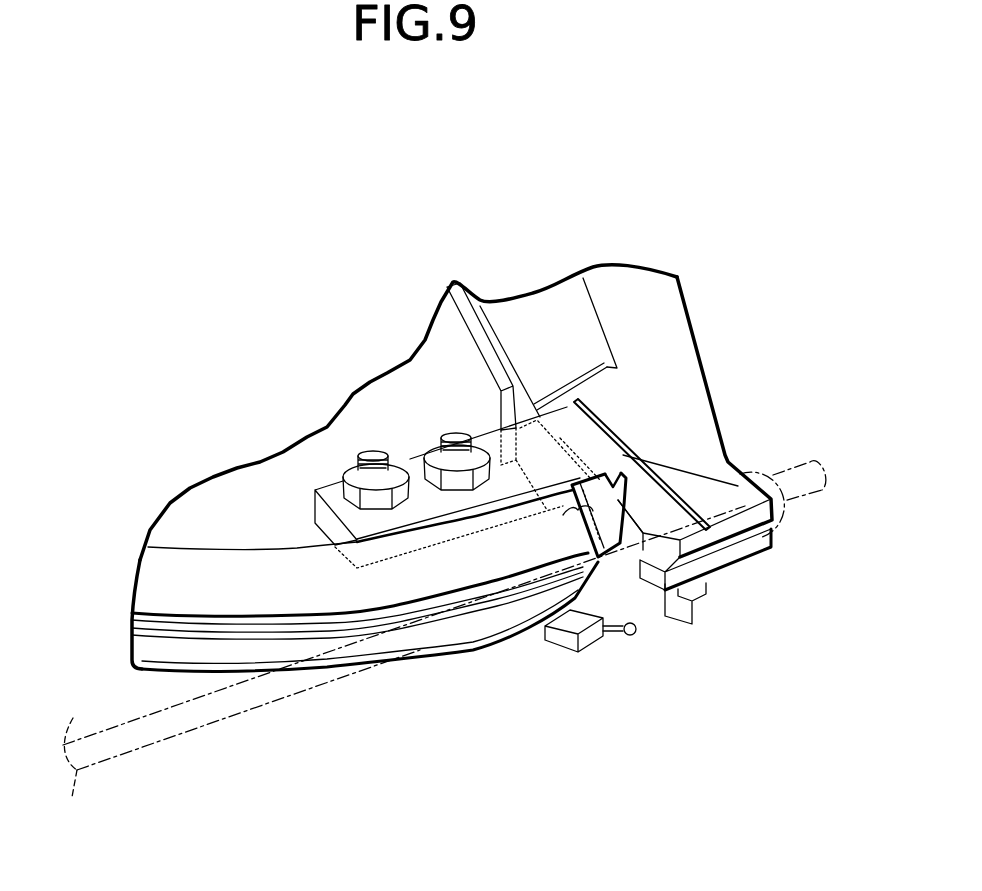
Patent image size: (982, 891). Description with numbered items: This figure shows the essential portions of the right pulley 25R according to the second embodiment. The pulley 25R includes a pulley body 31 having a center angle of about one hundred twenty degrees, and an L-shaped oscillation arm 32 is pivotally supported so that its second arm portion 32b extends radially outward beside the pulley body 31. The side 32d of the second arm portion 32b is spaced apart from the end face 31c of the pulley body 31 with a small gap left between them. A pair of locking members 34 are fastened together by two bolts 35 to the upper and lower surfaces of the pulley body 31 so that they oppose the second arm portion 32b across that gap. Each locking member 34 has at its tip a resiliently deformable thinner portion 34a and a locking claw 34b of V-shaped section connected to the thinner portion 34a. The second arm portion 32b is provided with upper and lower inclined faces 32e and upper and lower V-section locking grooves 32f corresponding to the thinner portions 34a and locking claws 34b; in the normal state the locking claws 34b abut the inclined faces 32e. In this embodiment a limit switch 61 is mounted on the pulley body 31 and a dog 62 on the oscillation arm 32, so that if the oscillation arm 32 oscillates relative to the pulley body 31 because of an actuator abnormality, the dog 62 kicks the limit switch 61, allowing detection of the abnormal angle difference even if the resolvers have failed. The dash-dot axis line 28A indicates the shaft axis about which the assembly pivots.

The oscillation arm 32 is at (694, 311).
The second arm portion 32b is at (705, 410).
The locking member 34 is at (326, 478).
The bolt 35 is at (456, 433).
The thinner portion 34a is at (564, 428).
The locking claw 34b is at (620, 472).
The side of second arm portion 32d is at (636, 505).
The end face of pulley body 31c is at (563, 515).
The inclined face 32e is at (605, 500).
The locking groove 32f is at (740, 474).
The dog 62 is at (678, 614).
The limit switch 61 is at (617, 637).
The pulley 25R is at (477, 666).
The pulley body 31 is at (172, 676).
The shaft axis 28A is at (118, 747).